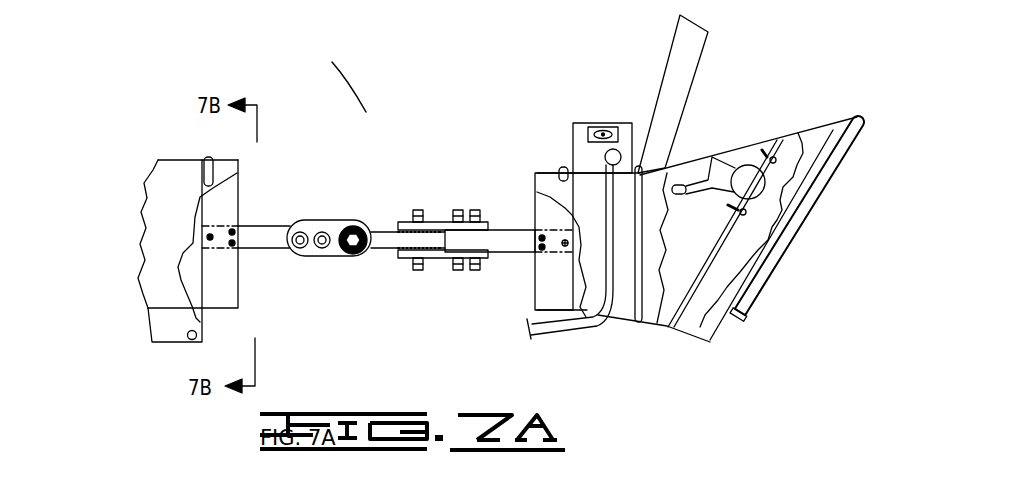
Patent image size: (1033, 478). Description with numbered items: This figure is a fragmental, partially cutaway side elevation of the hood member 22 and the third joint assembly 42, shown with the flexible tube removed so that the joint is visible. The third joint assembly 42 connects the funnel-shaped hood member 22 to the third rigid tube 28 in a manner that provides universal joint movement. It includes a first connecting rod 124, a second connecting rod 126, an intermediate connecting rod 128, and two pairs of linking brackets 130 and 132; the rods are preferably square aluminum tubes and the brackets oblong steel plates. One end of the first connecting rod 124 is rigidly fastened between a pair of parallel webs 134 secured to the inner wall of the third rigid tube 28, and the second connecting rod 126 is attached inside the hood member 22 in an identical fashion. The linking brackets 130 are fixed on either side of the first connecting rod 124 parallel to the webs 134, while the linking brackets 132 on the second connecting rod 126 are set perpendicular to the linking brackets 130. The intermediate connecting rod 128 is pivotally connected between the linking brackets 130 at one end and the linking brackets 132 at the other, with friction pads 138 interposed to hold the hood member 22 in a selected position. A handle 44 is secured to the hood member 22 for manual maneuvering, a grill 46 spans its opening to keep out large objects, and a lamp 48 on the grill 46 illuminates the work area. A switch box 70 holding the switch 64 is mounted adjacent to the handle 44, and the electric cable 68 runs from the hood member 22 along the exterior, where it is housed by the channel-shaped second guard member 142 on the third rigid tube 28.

The hood member 22 is at (813, 128).
The third rigid tube 28 is at (158, 160).
The third joint assembly 42 is at (333, 79).
The handle 44 is at (700, 52).
The grill 46 is at (688, 312).
The lamp 48 is at (750, 164).
The switch 64 is at (611, 127).
The electric cable 68 is at (550, 330).
The switch box 70 is at (572, 140).
The first connecting rod 124 is at (265, 253).
The second connecting rod 126 is at (515, 230).
The intermediate connecting rod 128 is at (387, 262).
The linking brackets 130 is at (327, 214).
The linking brackets 132 is at (438, 258).
The webs 134 is at (242, 195).
The friction pads 138 is at (360, 262).
The second guard member 142 is at (160, 345).